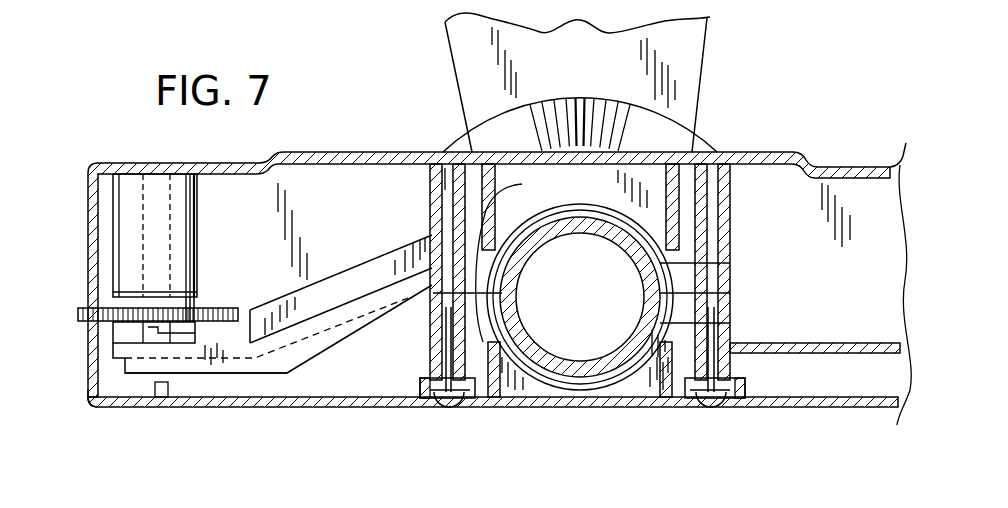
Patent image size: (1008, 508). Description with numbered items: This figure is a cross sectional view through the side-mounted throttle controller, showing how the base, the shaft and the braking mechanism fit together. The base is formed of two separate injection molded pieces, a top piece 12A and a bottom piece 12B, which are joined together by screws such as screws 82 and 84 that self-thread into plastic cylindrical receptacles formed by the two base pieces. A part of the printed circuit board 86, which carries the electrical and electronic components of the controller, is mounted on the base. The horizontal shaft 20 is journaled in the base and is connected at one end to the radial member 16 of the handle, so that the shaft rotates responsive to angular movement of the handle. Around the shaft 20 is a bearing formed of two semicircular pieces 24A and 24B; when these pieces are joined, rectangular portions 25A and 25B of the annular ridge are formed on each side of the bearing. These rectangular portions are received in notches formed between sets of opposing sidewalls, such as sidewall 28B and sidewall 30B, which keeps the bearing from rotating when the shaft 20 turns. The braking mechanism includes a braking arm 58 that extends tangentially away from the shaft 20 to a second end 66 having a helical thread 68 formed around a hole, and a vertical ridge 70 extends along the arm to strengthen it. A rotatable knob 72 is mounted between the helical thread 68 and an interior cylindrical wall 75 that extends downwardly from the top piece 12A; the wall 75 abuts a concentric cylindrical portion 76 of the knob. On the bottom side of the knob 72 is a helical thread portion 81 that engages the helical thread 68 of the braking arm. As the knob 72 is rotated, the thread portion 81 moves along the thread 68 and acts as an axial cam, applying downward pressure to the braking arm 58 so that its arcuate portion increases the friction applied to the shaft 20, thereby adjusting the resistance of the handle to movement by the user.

The upper portion of base 12A is at (88, 208).
The lower portion of base 12B is at (88, 378).
The radial member 16 is at (700, 37).
The shaft 20 is at (567, 368).
The bearing piece 24A is at (720, 260).
The bearing piece 24B is at (720, 313).
The rectangular portion of ridge 25A is at (495, 195).
The rectangular portion of ridge 25B is at (478, 393).
The sidewall 28B is at (690, 130).
The sidewall 30B is at (660, 390).
The braking arm 58 is at (367, 324).
The second end of braking arm 66 is at (233, 367).
The helical thread 68 is at (113, 343).
The vertical ridge 70 is at (345, 283).
The rotatable knob 72 is at (78, 316).
The interior cylindrical wall 75 is at (193, 220).
The concentric cylindrical portion of knob 76 is at (197, 297).
The helical thread portion 81 is at (117, 327).
The screw 82 is at (450, 404).
The screw 84 is at (717, 403).
The printed circuit board 86 is at (842, 343).